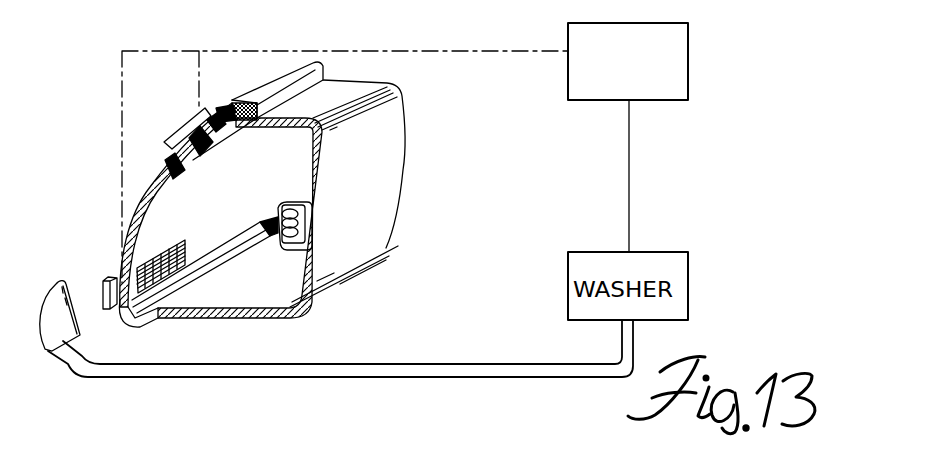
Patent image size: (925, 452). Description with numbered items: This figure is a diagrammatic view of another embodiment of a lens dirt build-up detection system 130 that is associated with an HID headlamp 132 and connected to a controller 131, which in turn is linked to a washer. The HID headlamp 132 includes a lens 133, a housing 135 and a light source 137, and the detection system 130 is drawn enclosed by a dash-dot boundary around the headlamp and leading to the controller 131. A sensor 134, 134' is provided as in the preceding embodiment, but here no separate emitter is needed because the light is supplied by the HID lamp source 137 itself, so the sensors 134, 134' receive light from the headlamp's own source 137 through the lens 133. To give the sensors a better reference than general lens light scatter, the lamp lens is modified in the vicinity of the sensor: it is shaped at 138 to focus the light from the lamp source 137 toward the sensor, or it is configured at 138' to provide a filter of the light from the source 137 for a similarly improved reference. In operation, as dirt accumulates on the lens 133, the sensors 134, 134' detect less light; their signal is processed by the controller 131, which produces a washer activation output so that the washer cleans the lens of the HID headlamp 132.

The lens dirt build-up detection system 130 is at (468, 52).
The controller 131 is at (688, 48).
The HID headlamp 132 is at (416, 142).
The lens 133 is at (145, 205).
The sensor 134 is at (154, 124).
The sensor 134' is at (68, 266).
The housing 135 is at (290, 307).
The light source 137 is at (273, 250).
The shaped lens portion 138 is at (235, 144).
The filter lens portion 138' is at (185, 304).